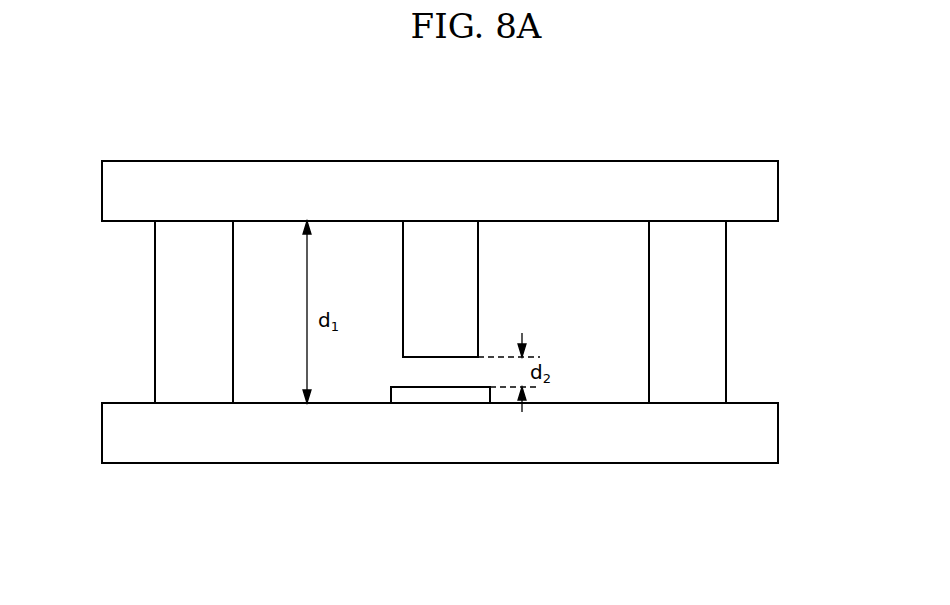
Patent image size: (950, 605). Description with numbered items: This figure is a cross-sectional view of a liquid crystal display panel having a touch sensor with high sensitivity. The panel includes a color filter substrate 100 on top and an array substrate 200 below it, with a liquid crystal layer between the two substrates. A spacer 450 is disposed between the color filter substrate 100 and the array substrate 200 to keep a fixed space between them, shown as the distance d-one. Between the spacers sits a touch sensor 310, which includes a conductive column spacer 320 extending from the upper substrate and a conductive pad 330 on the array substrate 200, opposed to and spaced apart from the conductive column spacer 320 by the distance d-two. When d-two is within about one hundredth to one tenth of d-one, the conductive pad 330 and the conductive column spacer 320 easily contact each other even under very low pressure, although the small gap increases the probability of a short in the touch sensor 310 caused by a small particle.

The color filter substrate 100 is at (820, 175).
The array substrate 200 is at (820, 452).
The spacer 450 is at (170, 318).
The touch sensor 310 is at (444, 393).
The conductive column spacer 320 is at (423, 350).
The conductive pad 330 is at (473, 398).